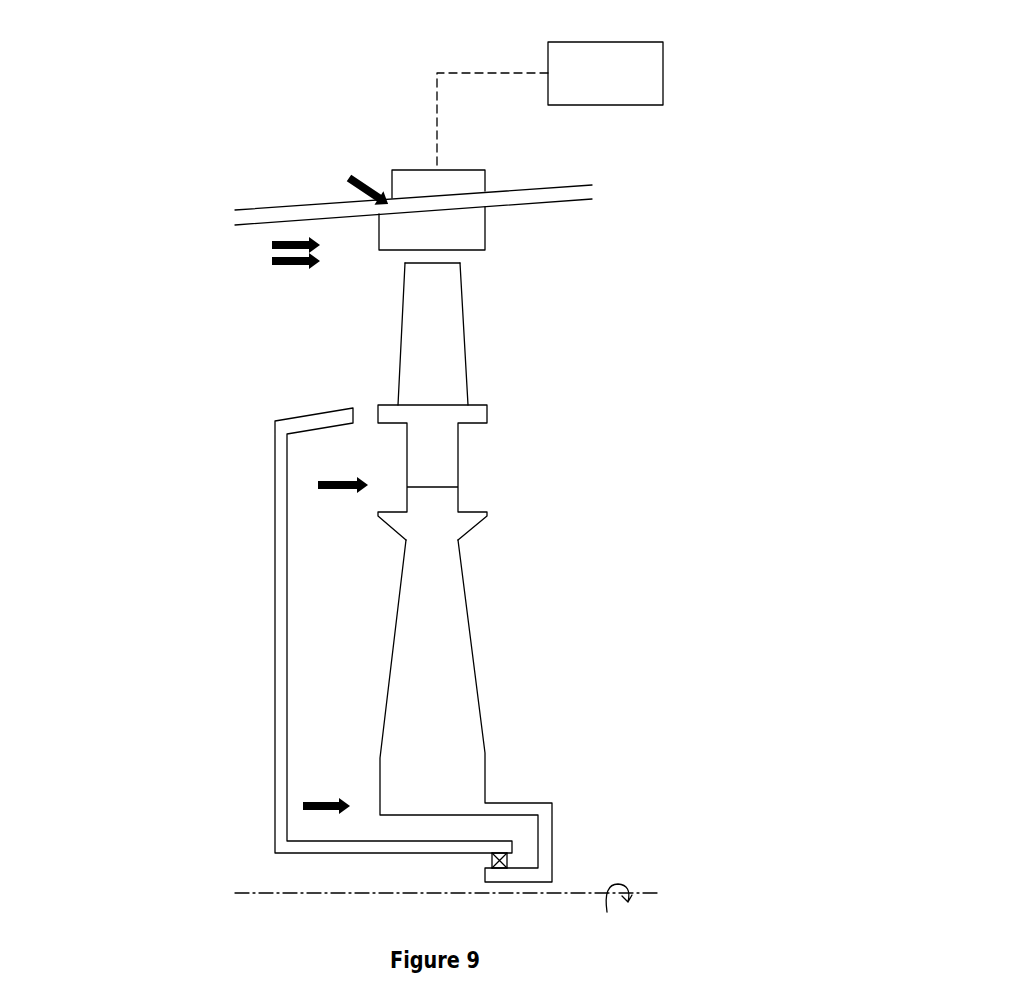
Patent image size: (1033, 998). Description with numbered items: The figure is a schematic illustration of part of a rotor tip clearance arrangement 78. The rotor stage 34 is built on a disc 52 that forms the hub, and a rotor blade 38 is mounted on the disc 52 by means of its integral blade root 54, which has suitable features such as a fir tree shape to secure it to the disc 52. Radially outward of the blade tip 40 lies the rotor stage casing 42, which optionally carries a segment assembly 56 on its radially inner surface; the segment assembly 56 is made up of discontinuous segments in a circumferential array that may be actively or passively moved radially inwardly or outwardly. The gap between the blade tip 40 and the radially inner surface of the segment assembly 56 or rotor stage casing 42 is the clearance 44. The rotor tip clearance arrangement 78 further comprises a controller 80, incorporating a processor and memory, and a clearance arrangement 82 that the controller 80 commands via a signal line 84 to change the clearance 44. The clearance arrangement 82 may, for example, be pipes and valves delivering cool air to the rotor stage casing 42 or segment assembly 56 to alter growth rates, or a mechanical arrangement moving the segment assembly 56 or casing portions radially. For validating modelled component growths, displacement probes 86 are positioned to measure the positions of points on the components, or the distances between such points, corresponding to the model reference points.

The rotor tip clearance arrangement 78 is at (239, 113).
The controller 80 is at (663, 73).
The signal line 84 is at (505, 72).
The clearance arrangement 82 is at (418, 180).
The rotor stage casing 42 is at (272, 217).
The segment assembly 56 is at (470, 228).
The clearance 44 is at (482, 264).
The blade tip 40 is at (423, 265).
The rotor blade 38 is at (423, 337).
The blade root 54 is at (453, 430).
The disc 52 is at (452, 585).
The rotor stage 34 is at (256, 411).
The displacement probe 86 is at (278, 262).